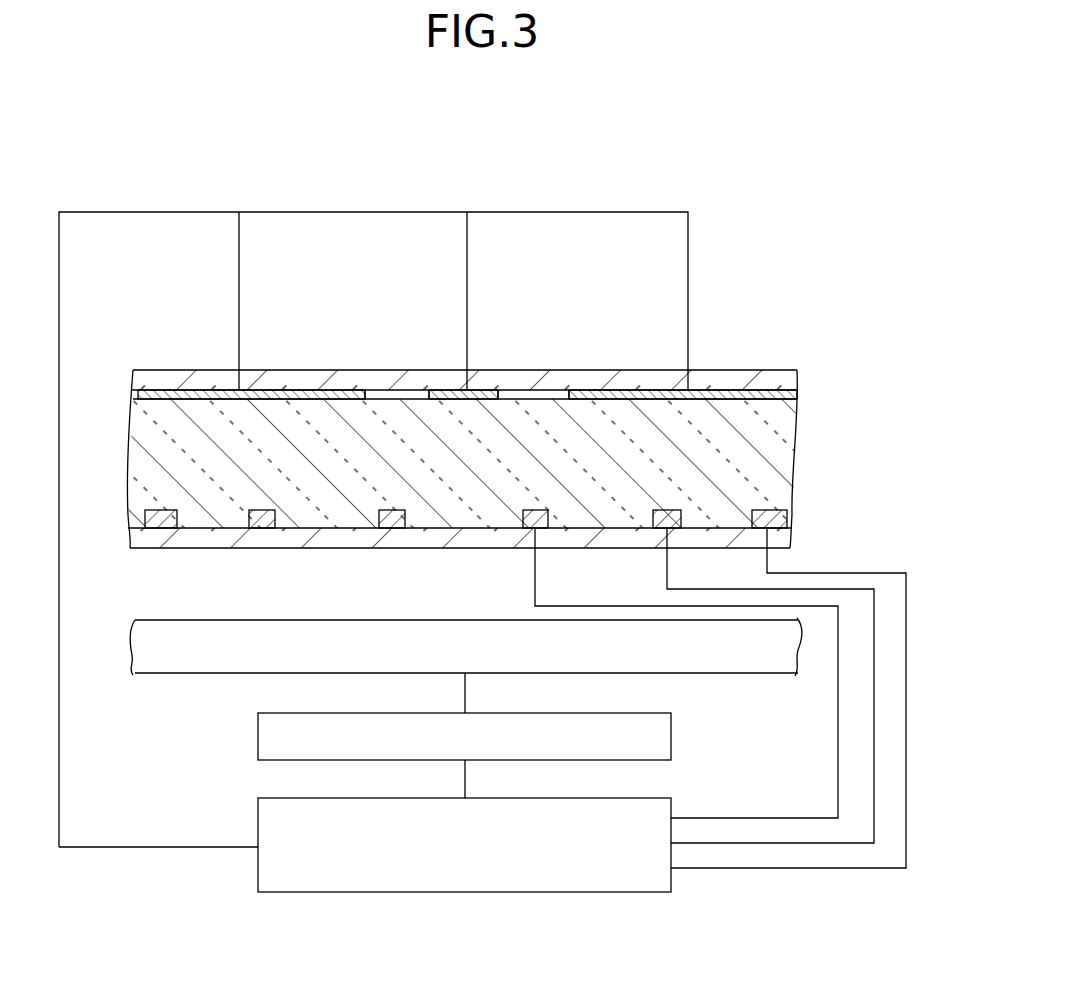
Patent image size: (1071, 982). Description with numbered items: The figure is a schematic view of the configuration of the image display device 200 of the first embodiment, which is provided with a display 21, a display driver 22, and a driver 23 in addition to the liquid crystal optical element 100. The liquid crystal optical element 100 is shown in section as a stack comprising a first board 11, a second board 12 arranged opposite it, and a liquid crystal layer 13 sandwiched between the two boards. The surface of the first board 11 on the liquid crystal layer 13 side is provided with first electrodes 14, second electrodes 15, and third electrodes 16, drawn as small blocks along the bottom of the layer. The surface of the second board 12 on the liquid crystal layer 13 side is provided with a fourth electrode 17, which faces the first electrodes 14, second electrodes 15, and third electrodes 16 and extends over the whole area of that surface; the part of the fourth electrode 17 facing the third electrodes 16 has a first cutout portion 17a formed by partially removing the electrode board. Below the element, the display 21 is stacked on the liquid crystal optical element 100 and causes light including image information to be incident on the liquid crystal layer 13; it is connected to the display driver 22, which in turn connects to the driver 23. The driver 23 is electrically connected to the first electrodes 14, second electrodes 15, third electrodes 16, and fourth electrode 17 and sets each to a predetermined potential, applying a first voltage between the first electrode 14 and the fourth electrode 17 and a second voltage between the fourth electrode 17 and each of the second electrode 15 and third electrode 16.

The image display device 200 is at (816, 163).
The liquid crystal optical element 100 is at (745, 358).
The second board 12 is at (798, 380).
The liquid crystal layer 13 is at (783, 452).
The first board 11 is at (786, 537).
The fourth electrode 17 is at (189, 390).
The first cutout portion 17a is at (396, 392).
The first electrode 14 is at (160, 528).
The second electrode 15 is at (263, 528).
The third electrode 16 is at (393, 528).
The display 21 is at (773, 662).
The display driver 22 is at (671, 723).
The driver 23 is at (671, 803).